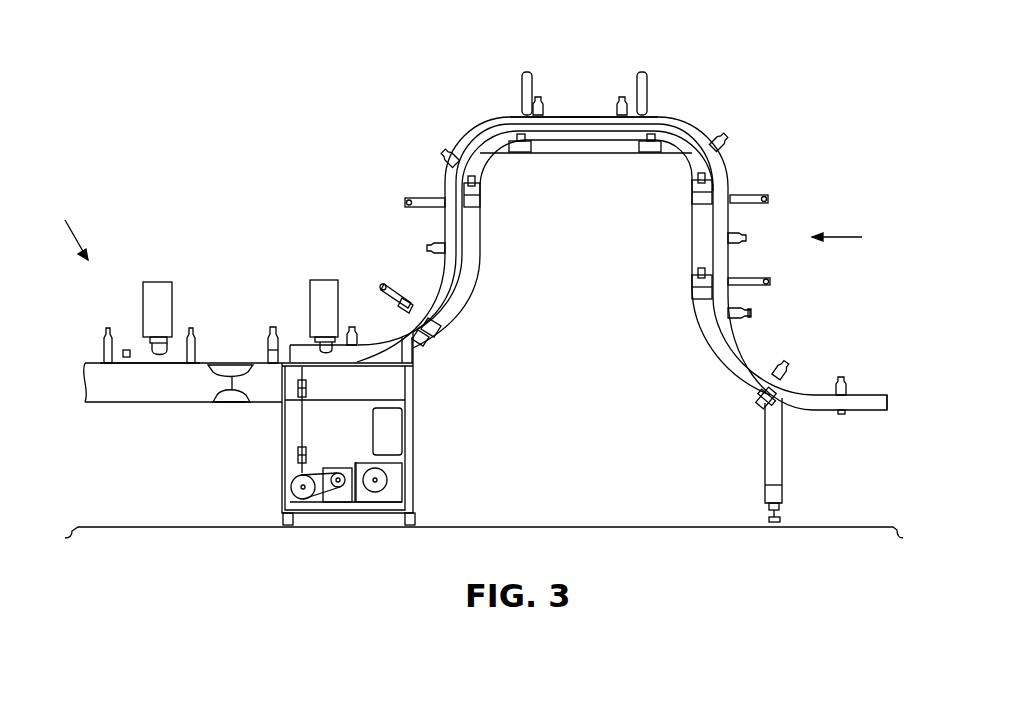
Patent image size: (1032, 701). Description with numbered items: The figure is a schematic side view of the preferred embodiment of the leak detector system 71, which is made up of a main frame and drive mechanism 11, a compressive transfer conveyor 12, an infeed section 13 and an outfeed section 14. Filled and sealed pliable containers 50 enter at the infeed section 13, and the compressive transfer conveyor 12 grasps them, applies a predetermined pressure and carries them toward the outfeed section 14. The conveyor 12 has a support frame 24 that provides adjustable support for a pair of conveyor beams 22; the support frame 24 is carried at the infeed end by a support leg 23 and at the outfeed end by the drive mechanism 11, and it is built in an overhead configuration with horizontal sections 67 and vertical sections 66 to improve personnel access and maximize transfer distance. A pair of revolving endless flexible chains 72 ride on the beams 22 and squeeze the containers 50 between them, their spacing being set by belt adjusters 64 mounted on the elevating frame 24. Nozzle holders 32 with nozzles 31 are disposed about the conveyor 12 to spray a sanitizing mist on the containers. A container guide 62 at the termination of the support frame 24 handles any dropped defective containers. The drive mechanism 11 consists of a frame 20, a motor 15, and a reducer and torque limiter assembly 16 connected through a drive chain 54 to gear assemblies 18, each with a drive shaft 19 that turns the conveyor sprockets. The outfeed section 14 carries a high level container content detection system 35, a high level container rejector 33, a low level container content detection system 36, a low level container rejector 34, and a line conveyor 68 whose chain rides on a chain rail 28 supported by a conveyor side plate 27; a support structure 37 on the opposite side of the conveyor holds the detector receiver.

The main frame and drive mechanism 11 is at (450, 448).
The compressive transfer conveyor 12 is at (425, 60).
The infeed section 13 is at (902, 352).
The outfeed section 14 is at (73, 228).
The motor 15 is at (397, 437).
The reducer and torque limiter assembly 16 is at (375, 462).
The gear assembly 18 is at (290, 463).
The drive shaft 19 is at (290, 430).
The frame 20 is at (408, 398).
The conveyor beams 22 is at (553, 117).
The support leg 23 is at (781, 488).
The support frame 24 is at (587, 145).
The conveyor side plate 27 is at (123, 407).
The chain rail 28 is at (232, 403).
The nozzles 31 is at (407, 198).
The nozzle holders 32 is at (420, 197).
The high level container rejector 33 is at (270, 352).
The low level container rejector 34 is at (127, 350).
The high level container content detection system 35 is at (323, 277).
The low level container content detection system 36 is at (158, 280).
The support structure 37 is at (157, 355).
The containers 50 is at (104, 340).
The drive chain 54 is at (312, 472).
The container guide 62 is at (382, 350).
The belt adjusters 64 is at (482, 200).
The vertical sections 66 is at (852, 238).
The horizontal sections 67 is at (580, 63).
The line conveyor 68 is at (227, 365).
The leak detector system 71 is at (172, 110).
The flexible conveyor chain 72 is at (580, 123).